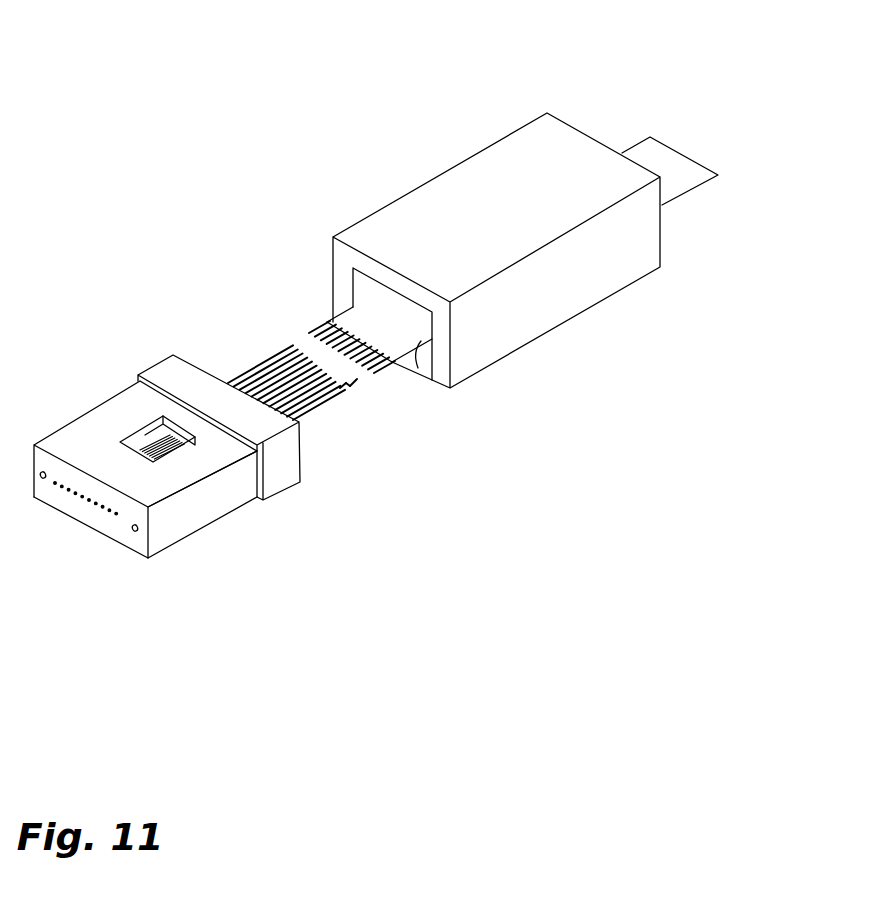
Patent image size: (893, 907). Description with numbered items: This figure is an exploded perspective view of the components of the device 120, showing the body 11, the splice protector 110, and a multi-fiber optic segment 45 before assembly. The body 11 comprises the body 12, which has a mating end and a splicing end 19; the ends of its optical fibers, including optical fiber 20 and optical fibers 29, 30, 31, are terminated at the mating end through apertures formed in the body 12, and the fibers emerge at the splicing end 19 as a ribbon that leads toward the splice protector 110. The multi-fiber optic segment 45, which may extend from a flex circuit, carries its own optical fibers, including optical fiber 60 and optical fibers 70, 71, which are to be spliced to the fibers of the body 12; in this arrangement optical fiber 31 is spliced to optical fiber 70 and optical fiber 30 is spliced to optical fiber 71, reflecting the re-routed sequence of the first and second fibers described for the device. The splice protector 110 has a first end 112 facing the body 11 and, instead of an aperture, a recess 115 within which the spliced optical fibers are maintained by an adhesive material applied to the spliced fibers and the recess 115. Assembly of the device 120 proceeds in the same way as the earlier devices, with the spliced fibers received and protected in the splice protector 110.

The device 11 is at (63, 427).
The body 12 is at (177, 545).
The splicing end 19 is at (192, 355).
The optical fiber 20 is at (277, 350).
The optical fiber 29 is at (108, 518).
The optical fiber 30 is at (113, 518).
The optical fiber 31 is at (122, 518).
The multi-fiber optic segment 45 is at (635, 146).
The optical fiber 60 is at (312, 333).
The optical fiber 70 is at (392, 366).
The optical fiber 71 is at (378, 375).
The splice protector 110 is at (490, 143).
The first end 112 is at (343, 258).
The recess 115 is at (418, 368).
The device 120 is at (328, 51).